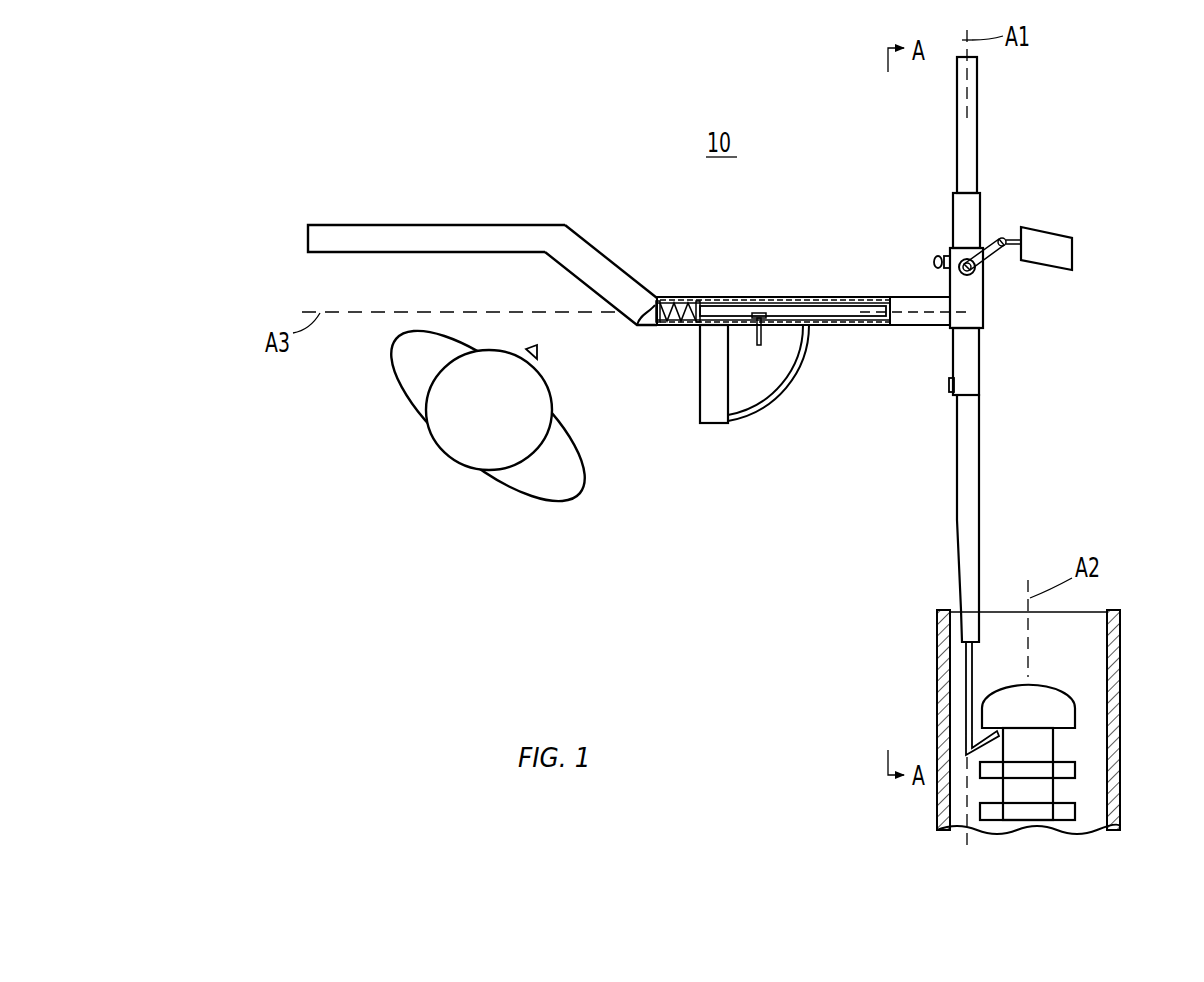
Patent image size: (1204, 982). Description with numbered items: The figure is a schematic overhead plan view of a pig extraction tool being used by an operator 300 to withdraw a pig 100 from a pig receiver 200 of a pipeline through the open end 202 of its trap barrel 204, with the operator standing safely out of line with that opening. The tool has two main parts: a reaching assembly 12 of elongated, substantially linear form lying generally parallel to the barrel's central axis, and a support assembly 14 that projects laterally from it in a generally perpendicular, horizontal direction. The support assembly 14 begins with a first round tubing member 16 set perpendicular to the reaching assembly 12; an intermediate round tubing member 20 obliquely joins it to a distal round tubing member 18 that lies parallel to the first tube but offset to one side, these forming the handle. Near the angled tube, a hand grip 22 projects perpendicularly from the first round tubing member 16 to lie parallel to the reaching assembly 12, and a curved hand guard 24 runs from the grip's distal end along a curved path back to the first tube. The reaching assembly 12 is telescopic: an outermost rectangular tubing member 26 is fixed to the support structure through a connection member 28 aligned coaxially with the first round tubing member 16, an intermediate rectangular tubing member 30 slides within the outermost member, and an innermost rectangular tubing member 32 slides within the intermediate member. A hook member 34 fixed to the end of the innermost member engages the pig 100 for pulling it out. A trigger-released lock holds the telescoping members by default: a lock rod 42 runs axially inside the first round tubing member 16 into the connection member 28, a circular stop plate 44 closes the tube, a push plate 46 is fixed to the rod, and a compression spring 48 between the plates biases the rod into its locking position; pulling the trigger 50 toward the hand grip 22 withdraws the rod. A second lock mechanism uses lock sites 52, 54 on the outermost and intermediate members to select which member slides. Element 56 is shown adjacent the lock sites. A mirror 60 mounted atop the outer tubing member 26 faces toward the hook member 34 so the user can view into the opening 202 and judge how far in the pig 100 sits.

The reaching assembly 12 is at (997, 110).
The support assembly 14 is at (300, 244).
The first round tubing member 16 is at (856, 298).
The distal round tubing member 18 is at (340, 230).
The intermediate round tubing member 20 is at (585, 243).
The hand grip 22 is at (712, 425).
The curved hand guard 24 is at (772, 405).
The outermost rectangular tubing member 26 is at (985, 292).
The connection member 28 is at (922, 328).
The intermediate rectangular tubing member 30 is at (975, 373).
The innermost rectangular tubing member 32 is at (970, 430).
The hook member 34 is at (972, 665).
The lock rod 42 is at (765, 305).
The circular stop plate 44 is at (650, 322).
The push plate 46 is at (705, 303).
The compression spring 48 is at (673, 300).
The trigger 50 is at (770, 345).
The lock site 52 is at (942, 250).
The lock site 54 is at (946, 396).
The knob 56 is at (933, 262).
The mirror 60 is at (1048, 240).
The pig 100 is at (1052, 704).
The pig receiver 200 is at (934, 622).
The open end 202 is at (1103, 590).
The trap barrel 204 is at (935, 658).
The operator 300 is at (440, 465).